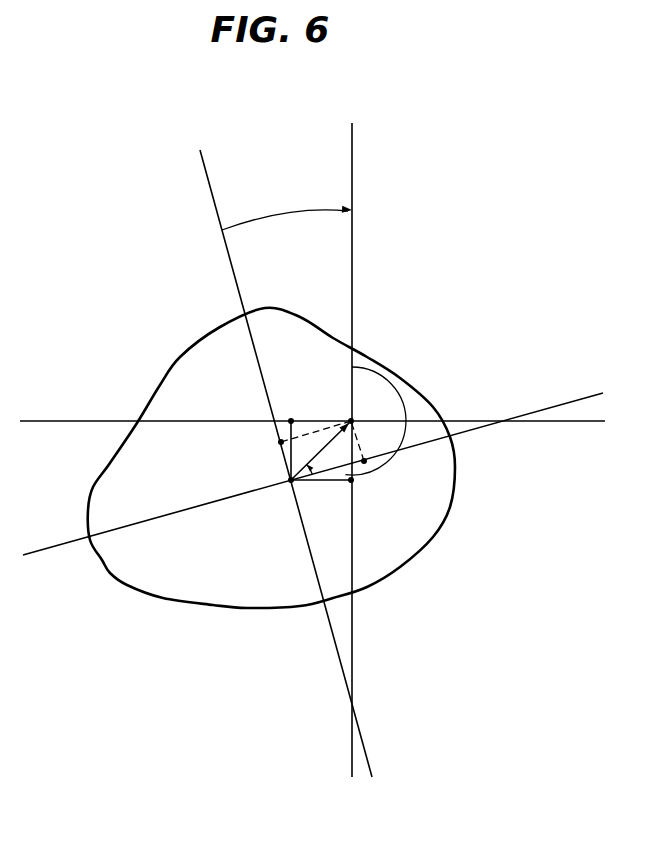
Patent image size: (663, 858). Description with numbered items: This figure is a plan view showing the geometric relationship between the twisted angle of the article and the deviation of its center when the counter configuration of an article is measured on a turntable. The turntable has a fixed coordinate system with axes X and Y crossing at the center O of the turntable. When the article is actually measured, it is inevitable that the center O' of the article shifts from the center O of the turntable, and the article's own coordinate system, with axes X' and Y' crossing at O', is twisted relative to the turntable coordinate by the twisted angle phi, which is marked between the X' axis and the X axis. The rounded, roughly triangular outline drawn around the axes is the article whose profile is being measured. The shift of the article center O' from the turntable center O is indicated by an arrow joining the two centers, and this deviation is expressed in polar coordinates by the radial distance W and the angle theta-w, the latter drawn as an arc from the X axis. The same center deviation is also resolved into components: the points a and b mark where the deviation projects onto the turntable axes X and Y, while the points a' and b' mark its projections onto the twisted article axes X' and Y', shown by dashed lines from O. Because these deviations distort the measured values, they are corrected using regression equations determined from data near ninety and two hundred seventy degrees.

The X axis of turntable coordinate system X is at (352, 437).
The Y axis of turntable coordinate system Y is at (321, 422).
The X' axis of article coordinate system X' is at (279, 450).
The Y' axis of article coordinate system Y' is at (323, 467).
The center of the turntable O is at (343, 408).
The center of the article O' is at (308, 466).
The projection point a is at (329, 489).
The projection point b is at (291, 436).
The projection point a' is at (303, 438).
The projection point b' is at (367, 442).
The radial deviation of center W is at (299, 474).